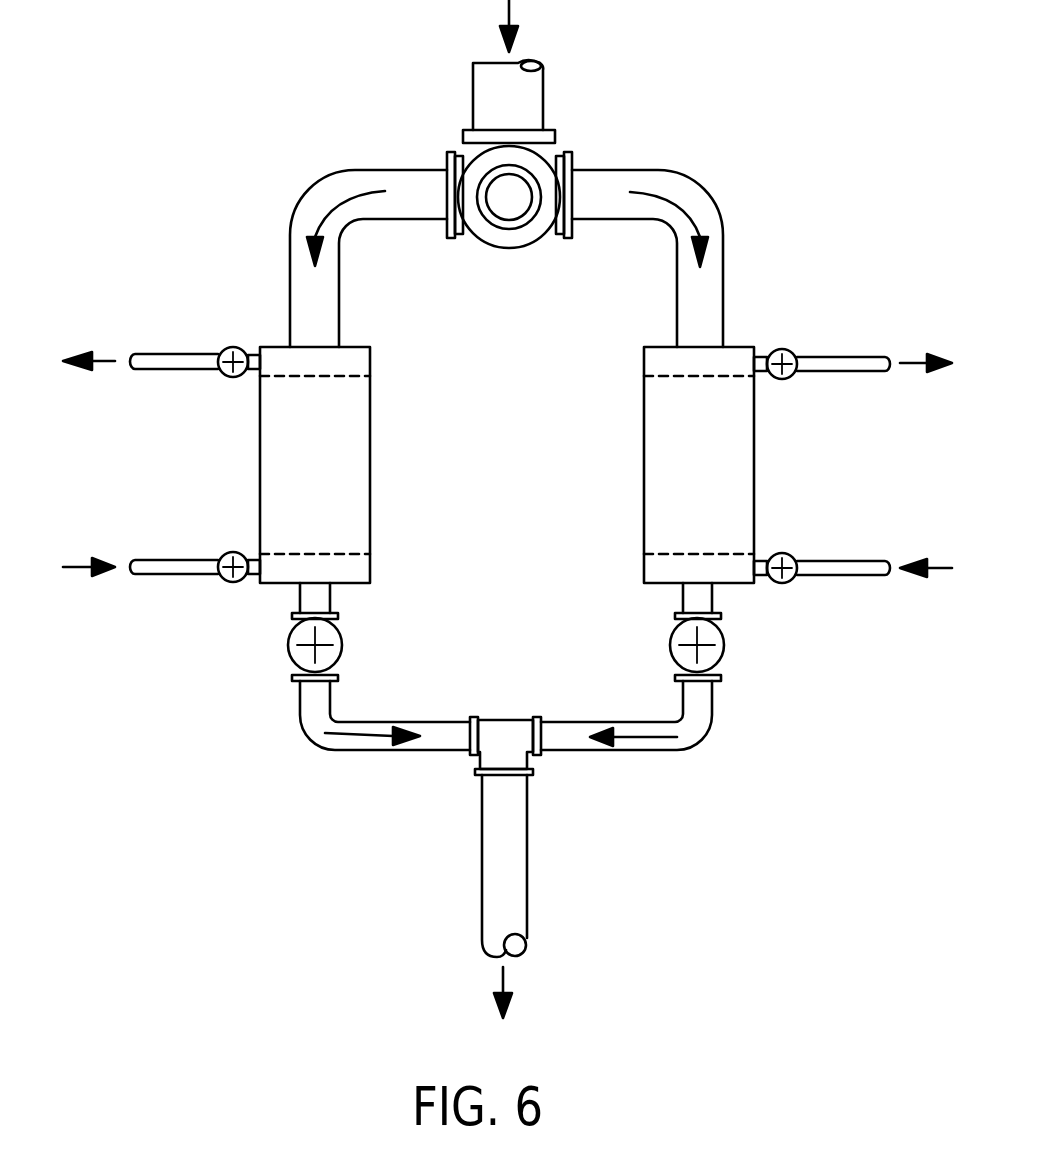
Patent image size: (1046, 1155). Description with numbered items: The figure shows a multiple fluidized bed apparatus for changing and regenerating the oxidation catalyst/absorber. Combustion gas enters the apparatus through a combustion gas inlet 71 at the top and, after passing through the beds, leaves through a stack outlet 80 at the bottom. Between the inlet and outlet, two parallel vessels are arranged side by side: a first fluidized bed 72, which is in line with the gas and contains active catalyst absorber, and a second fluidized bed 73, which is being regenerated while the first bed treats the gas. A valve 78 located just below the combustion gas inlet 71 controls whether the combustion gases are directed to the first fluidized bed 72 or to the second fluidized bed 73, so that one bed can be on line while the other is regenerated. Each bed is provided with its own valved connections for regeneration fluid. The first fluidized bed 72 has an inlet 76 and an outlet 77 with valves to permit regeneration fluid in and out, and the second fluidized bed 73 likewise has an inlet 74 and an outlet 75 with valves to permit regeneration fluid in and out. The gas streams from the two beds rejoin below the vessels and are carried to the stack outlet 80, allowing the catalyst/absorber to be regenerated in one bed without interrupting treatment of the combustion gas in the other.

The combustion gas inlet 71 is at (543, 93).
The first fluidized bed 72 is at (327, 481).
The second fluidized bed 73 is at (715, 481).
The inlet 74 is at (782, 349).
The outlet 75 is at (782, 584).
The inlet 76 is at (236, 347).
The outlet 77 is at (234, 583).
The valve 78 is at (505, 202).
The stack outlet 80 is at (527, 860).